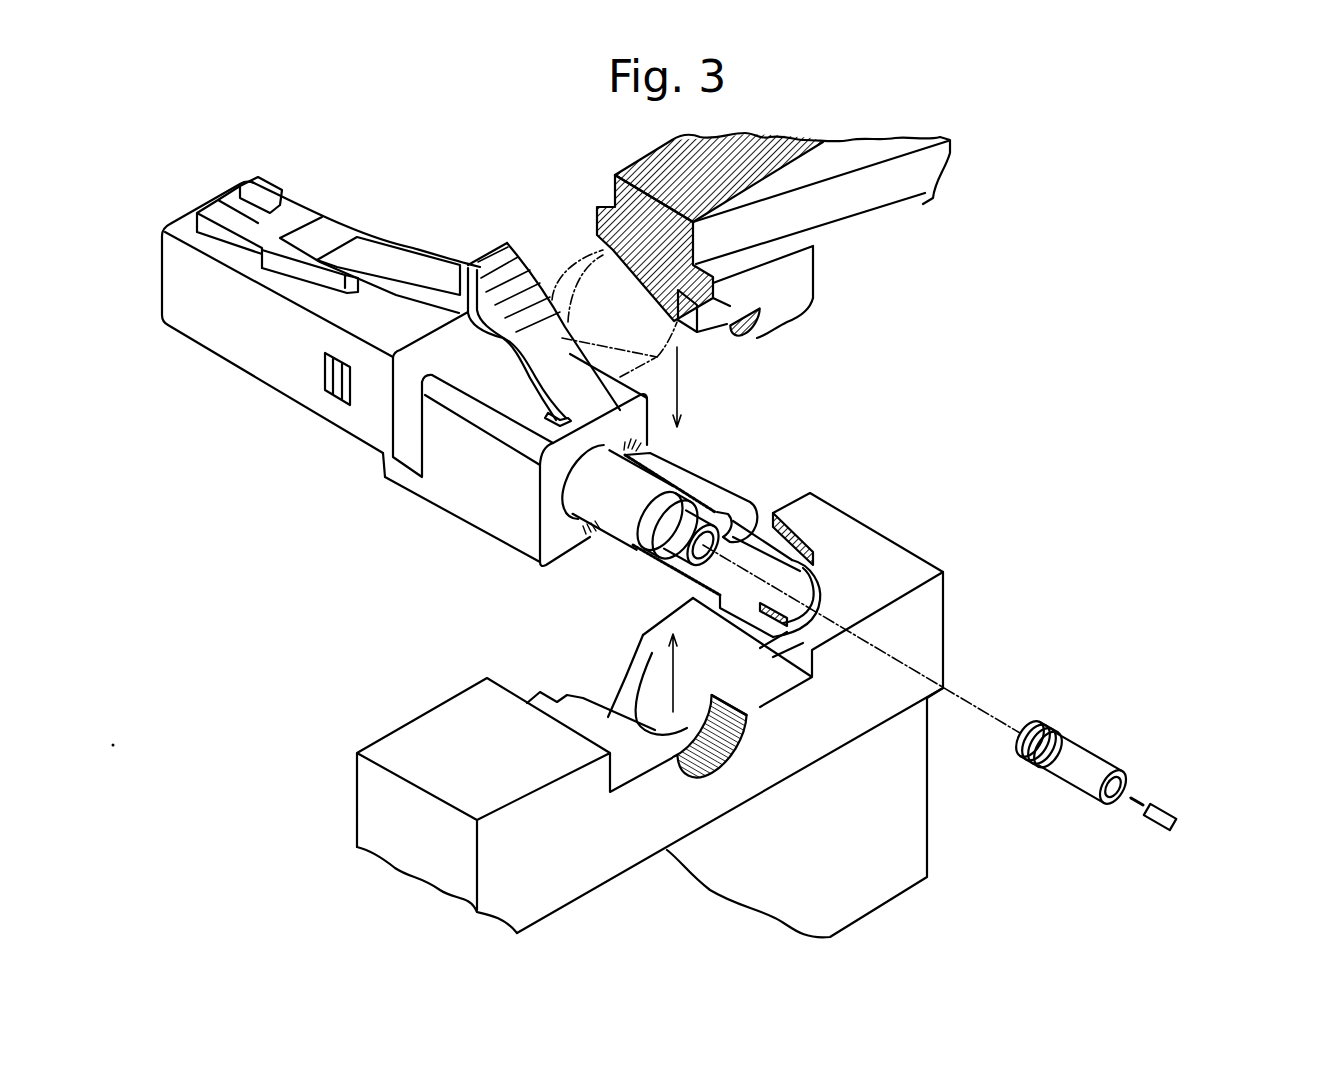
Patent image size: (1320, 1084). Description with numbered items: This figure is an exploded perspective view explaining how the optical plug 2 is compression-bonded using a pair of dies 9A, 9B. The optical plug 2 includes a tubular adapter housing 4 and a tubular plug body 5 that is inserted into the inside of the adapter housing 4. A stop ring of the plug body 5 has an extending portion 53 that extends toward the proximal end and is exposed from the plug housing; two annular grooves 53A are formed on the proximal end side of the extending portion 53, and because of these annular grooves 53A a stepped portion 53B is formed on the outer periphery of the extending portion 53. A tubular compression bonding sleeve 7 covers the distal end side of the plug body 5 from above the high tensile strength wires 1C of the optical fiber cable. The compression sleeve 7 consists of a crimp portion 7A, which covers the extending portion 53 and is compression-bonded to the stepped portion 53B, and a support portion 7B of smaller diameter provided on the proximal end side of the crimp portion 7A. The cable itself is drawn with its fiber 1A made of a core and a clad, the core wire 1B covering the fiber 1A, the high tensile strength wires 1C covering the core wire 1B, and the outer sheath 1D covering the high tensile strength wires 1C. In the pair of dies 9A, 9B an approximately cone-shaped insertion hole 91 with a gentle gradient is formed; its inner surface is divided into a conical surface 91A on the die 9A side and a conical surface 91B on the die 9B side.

The optical plug 2 is at (423, 228).
The adapter housing 4 is at (238, 375).
The plug body 5 is at (386, 484).
The compression bonding sleeve 7 is at (774, 529).
The crimp portion 7A is at (693, 470).
The support portion 7B is at (813, 558).
The die 9A is at (744, 245).
The die 9B is at (685, 716).
The insertion hole 91 is at (737, 765).
The conical surface 91A is at (640, 272).
The conical surface 91B is at (670, 733).
The extending portion 53 is at (588, 516).
The annular grooves 53A is at (667, 553).
The stepped portion 53B is at (640, 547).
The high tensile strength wires 1C is at (588, 528).
The outer sheath 1D is at (1093, 750).
The fiber 1A is at (1140, 793).
The core wire 1B is at (1173, 807).